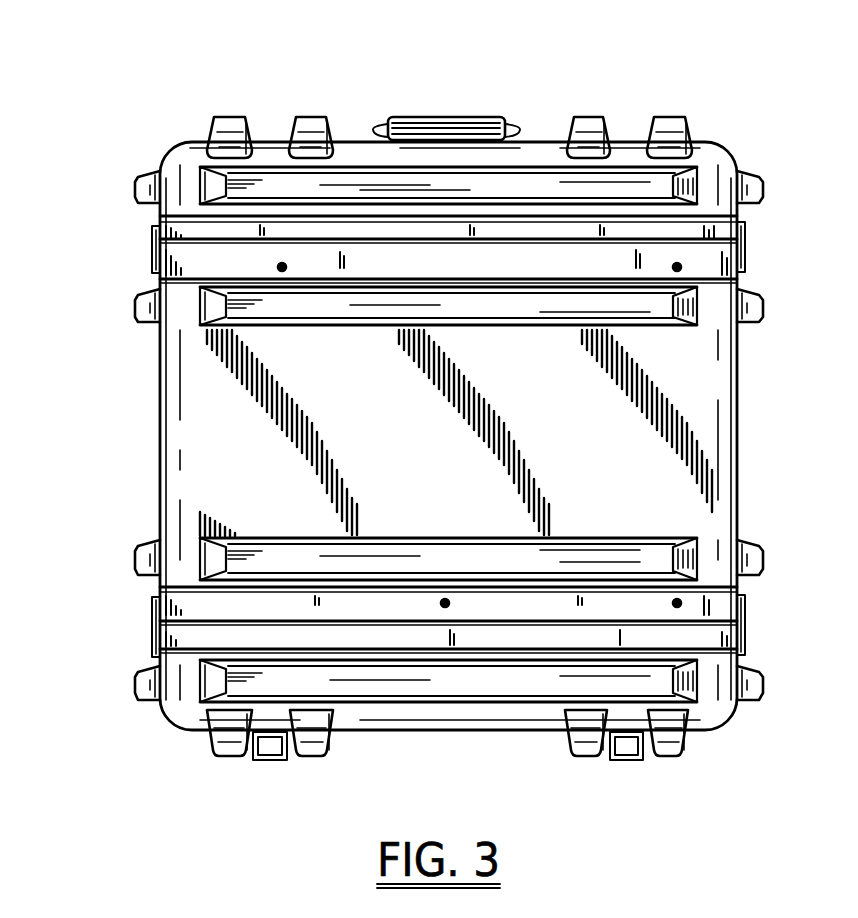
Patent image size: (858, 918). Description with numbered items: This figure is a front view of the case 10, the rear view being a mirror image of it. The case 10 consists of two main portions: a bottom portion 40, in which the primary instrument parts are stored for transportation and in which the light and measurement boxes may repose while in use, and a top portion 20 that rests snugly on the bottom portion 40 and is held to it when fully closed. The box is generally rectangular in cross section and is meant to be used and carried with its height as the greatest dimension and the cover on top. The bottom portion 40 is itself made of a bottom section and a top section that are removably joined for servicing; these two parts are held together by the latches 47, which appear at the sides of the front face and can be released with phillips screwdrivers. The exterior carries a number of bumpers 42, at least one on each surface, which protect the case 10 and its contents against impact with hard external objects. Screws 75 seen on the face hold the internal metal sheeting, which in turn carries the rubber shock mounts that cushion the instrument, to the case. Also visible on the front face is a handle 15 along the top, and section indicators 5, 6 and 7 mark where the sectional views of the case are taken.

The case 10 is at (150, 417).
The handle 15 is at (420, 116).
The top portion 20 is at (716, 142).
The bottom portion 40 is at (700, 440).
The bumpers 42 is at (135, 300).
The latches 47 is at (150, 603).
The screws 75 is at (440, 603).
The section line 5 is at (107, 800).
The section line 6 is at (857, 244).
The section line 7 is at (72, 246).